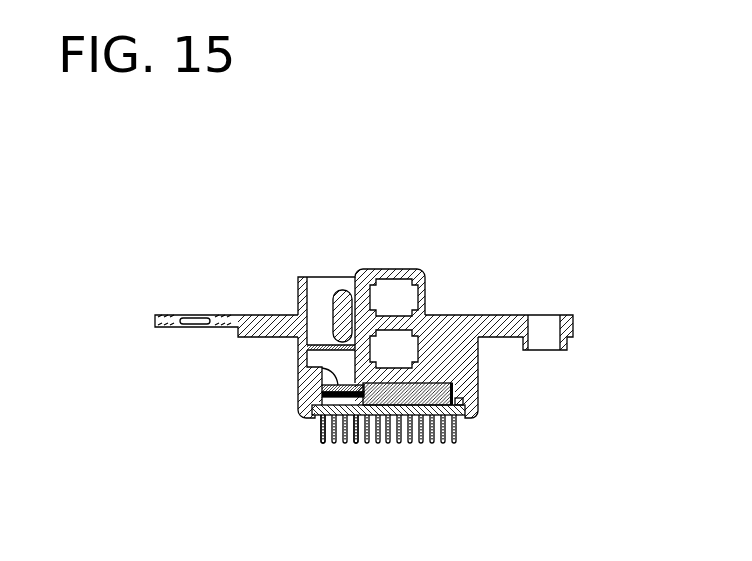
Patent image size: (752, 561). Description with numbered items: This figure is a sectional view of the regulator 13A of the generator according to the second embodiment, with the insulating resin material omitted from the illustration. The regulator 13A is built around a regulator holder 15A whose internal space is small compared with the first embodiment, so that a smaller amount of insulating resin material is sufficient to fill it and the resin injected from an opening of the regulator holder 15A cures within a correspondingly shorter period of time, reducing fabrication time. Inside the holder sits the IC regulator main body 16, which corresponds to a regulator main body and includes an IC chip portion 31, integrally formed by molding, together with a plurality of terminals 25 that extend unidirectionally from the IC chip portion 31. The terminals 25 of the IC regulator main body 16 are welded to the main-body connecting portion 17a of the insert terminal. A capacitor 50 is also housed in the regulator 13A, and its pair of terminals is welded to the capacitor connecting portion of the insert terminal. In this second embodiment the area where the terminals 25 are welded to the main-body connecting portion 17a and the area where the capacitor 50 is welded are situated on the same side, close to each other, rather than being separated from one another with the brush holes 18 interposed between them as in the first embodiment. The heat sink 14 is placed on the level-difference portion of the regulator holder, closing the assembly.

The regulator 13A is at (256, 277).
The capacitor 50 is at (343, 290).
The brush holes 18 is at (393, 298).
The regulator holder 15A is at (462, 315).
The main-body connecting portion 17a is at (322, 378).
The IC chip portion 31 is at (455, 400).
The heat sink 14 is at (322, 425).
The terminals 25 is at (358, 433).
The IC regulator main body 16 is at (395, 423).